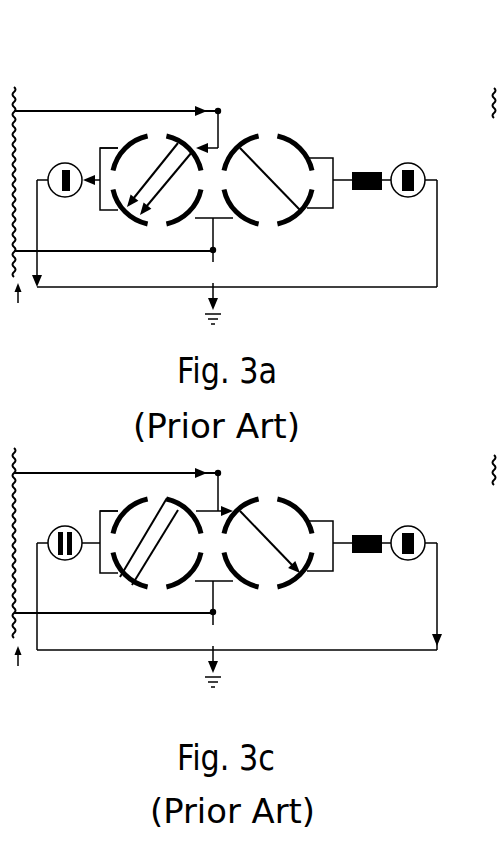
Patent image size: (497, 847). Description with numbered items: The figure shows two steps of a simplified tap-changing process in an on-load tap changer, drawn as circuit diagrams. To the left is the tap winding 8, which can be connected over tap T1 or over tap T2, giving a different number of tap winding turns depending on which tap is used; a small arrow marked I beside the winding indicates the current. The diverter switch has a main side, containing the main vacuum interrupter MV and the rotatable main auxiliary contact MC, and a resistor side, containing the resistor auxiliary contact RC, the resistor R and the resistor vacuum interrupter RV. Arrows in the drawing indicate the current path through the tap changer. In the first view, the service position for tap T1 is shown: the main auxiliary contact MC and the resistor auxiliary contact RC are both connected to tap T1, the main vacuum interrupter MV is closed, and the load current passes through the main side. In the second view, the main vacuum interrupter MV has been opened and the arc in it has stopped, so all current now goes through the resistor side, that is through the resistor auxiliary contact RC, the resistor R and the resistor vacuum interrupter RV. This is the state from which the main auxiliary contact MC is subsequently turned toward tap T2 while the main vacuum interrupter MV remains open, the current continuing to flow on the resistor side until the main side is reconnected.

In FIG. 3A, the tap winding 8 is at (32, 87).
In FIG. 3C, the tap winding 8 is at (54, 499).
In FIG. 3A, the main vacuum interrupter MV is at (68, 167).
In FIG. 3C, the main vacuum interrupter MV is at (68, 530).
In FIG. 3A, the main auxiliary contact MC is at (142, 192).
In FIG. 3C, the main auxiliary contact MC is at (144, 556).
In FIG. 3A, the resistor auxiliary contact RC is at (278, 199).
In FIG. 3C, the resistor auxiliary contact RC is at (278, 562).
In FIG. 3A, the resistor R is at (367, 197).
In FIG. 3C, the resistor R is at (367, 560).
In FIG. 3A, the resistor vacuum interrupter RV is at (409, 170).
In FIG. 3C, the resistor vacuum interrupter RV is at (409, 533).
In FIG. 3A, the tap T1 is at (234, 110).
In FIG. 3C, the tap T1 is at (234, 472).
In FIG. 3A, the tap T2 is at (213, 267).
In FIG. 3C, the tap T2 is at (213, 630).
In FIG. 3A, the current I is at (23, 307).
In FIG. 3C, the current I is at (23, 670).